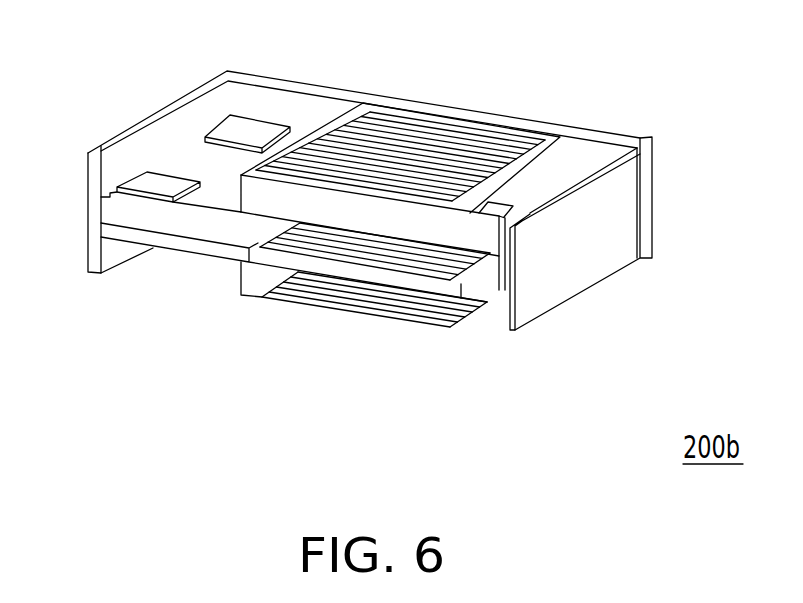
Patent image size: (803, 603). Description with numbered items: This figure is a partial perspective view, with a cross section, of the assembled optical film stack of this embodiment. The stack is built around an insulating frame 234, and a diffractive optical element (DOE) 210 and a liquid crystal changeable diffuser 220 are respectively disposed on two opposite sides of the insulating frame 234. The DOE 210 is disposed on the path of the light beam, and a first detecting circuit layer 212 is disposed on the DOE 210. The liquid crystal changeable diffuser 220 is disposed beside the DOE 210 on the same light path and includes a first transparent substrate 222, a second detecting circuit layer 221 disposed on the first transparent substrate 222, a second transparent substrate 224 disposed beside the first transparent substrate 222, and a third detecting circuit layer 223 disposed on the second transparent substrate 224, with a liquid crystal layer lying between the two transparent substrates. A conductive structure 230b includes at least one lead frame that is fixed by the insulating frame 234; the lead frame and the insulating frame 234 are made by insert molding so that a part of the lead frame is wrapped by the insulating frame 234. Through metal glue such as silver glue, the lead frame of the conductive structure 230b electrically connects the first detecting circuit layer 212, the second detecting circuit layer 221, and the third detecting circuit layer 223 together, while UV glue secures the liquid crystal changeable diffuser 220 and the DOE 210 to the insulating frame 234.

The diffractive optical element 210 is at (262, 284).
The first detecting circuit layer 212 is at (407, 303).
The liquid crystal changeable diffuser 220 is at (560, 159).
The second detecting circuit layer 221 is at (340, 260).
The first transparent substrate 222 is at (187, 222).
The third detecting circuit layer 223 is at (451, 135).
The second transparent substrate 224 is at (280, 198).
The conductive structure 230b is at (483, 289).
The insulating frame 234 is at (104, 149).